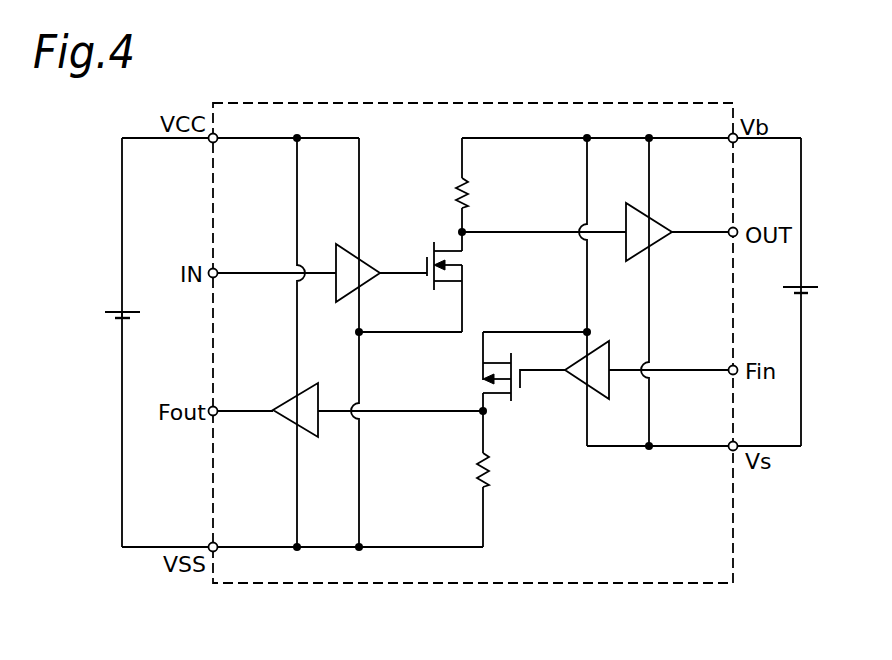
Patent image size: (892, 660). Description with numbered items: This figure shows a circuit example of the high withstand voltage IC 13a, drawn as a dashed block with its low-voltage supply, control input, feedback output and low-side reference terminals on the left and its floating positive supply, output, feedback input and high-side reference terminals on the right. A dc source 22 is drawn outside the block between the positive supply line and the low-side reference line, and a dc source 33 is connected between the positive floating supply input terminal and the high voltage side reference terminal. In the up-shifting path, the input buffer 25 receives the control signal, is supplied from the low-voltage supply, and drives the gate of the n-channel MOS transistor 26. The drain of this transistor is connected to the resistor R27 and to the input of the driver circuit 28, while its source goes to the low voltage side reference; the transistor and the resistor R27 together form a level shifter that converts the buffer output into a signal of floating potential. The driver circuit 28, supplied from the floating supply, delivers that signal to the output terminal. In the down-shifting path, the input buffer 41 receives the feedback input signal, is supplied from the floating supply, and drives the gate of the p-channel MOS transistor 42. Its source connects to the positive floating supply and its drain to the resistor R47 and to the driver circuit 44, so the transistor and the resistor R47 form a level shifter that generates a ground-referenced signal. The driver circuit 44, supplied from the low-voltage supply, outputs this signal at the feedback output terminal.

The high withstand voltage IC 13a is at (737, 535).
The power supply battery 22 is at (108, 311).
The input buffer 25 is at (346, 243).
The n-channel MOS transistor 26 is at (428, 248).
The resistor R27 is at (482, 189).
The driver circuit 28 is at (658, 221).
The dc source 33 is at (812, 286).
The input buffer 41 is at (598, 342).
The p-channel MOS transistor 42 is at (480, 385).
The resistor R47 is at (494, 460).
The driver circuit 44 is at (308, 382).